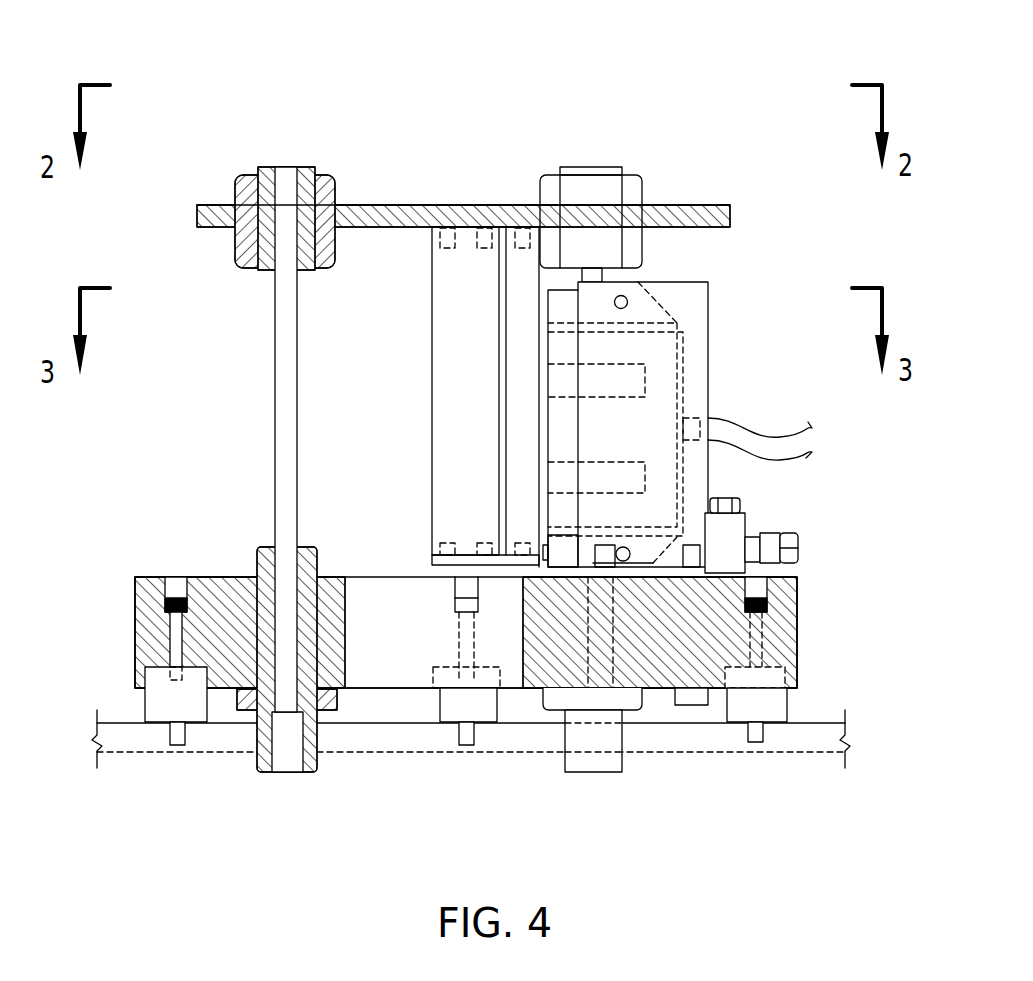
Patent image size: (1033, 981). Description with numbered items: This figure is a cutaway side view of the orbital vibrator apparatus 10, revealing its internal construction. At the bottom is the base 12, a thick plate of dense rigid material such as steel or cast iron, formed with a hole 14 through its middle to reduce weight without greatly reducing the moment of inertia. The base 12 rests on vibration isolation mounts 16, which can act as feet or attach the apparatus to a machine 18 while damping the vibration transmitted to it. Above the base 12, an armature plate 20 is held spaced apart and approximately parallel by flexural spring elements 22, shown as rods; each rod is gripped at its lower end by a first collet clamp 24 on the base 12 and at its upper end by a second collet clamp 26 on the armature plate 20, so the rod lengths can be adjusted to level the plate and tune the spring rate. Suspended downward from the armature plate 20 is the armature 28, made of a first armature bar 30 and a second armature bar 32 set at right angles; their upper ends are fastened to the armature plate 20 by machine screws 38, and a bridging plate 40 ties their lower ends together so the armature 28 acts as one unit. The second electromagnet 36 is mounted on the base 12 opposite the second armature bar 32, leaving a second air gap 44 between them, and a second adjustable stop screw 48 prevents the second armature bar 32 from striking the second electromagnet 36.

The orbital vibrator apparatus 10 is at (490, 98).
The base 12 is at (787, 635).
The hole 14 is at (405, 690).
The vibration isolation mounts 16 is at (160, 712).
The machine 18 is at (692, 742).
The armature plate 20 is at (703, 205).
The flexural spring elements 22 is at (278, 470).
The first collet clamp 24 is at (258, 548).
The second collet clamp 26 is at (262, 168).
The armature 28 is at (409, 375).
The first armature bar 30 is at (480, 407).
The second armature bar 32 is at (538, 407).
The second electromagnet 36 is at (663, 410).
The machine screws 38 is at (517, 205).
The bridging plate 40 is at (430, 556).
The second air gap 44 is at (543, 290).
The second adjustable stop screw 48 is at (798, 540).